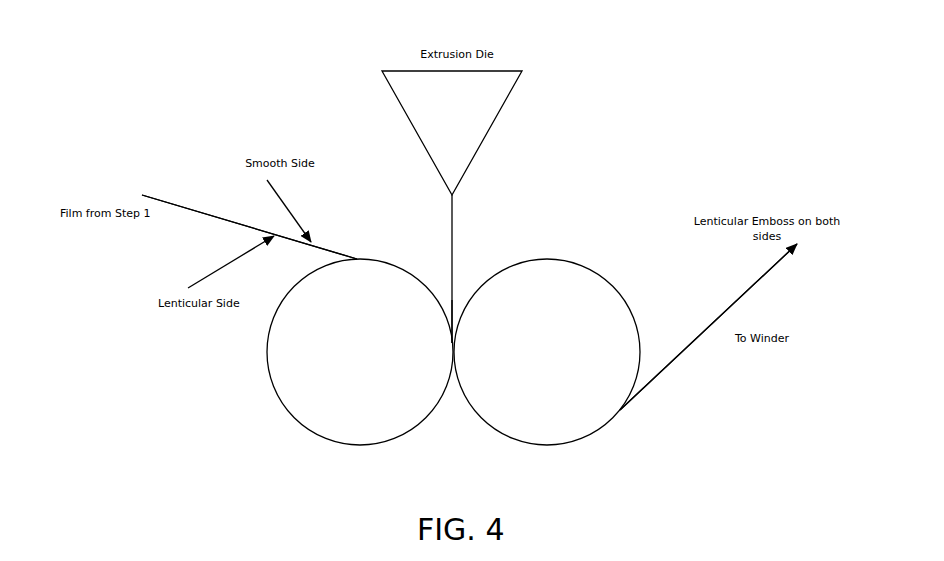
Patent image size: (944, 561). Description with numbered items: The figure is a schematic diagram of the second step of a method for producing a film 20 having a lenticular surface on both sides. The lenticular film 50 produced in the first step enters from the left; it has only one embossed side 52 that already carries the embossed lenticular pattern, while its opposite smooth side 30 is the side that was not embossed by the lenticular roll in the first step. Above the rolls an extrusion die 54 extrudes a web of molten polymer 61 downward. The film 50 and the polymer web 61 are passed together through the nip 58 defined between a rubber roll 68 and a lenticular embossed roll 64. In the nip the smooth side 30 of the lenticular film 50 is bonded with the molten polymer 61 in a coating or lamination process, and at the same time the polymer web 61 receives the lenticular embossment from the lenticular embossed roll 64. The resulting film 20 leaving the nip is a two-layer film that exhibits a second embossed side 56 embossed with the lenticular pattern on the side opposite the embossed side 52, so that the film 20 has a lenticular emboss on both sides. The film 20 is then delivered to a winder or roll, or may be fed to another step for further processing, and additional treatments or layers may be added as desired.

The film 20 is at (703, 298).
The smooth side 30 is at (332, 236).
The lenticular film 50 is at (186, 207).
The embossed side 52 is at (469, 284).
The extrusion die 54 is at (505, 104).
The embossed side 56 is at (692, 337).
The nip between rolls 58 is at (450, 406).
The molten polymer 61 is at (452, 240).
The lenticular embossed roll 64 is at (587, 267).
The rubber roll 68 is at (393, 266).